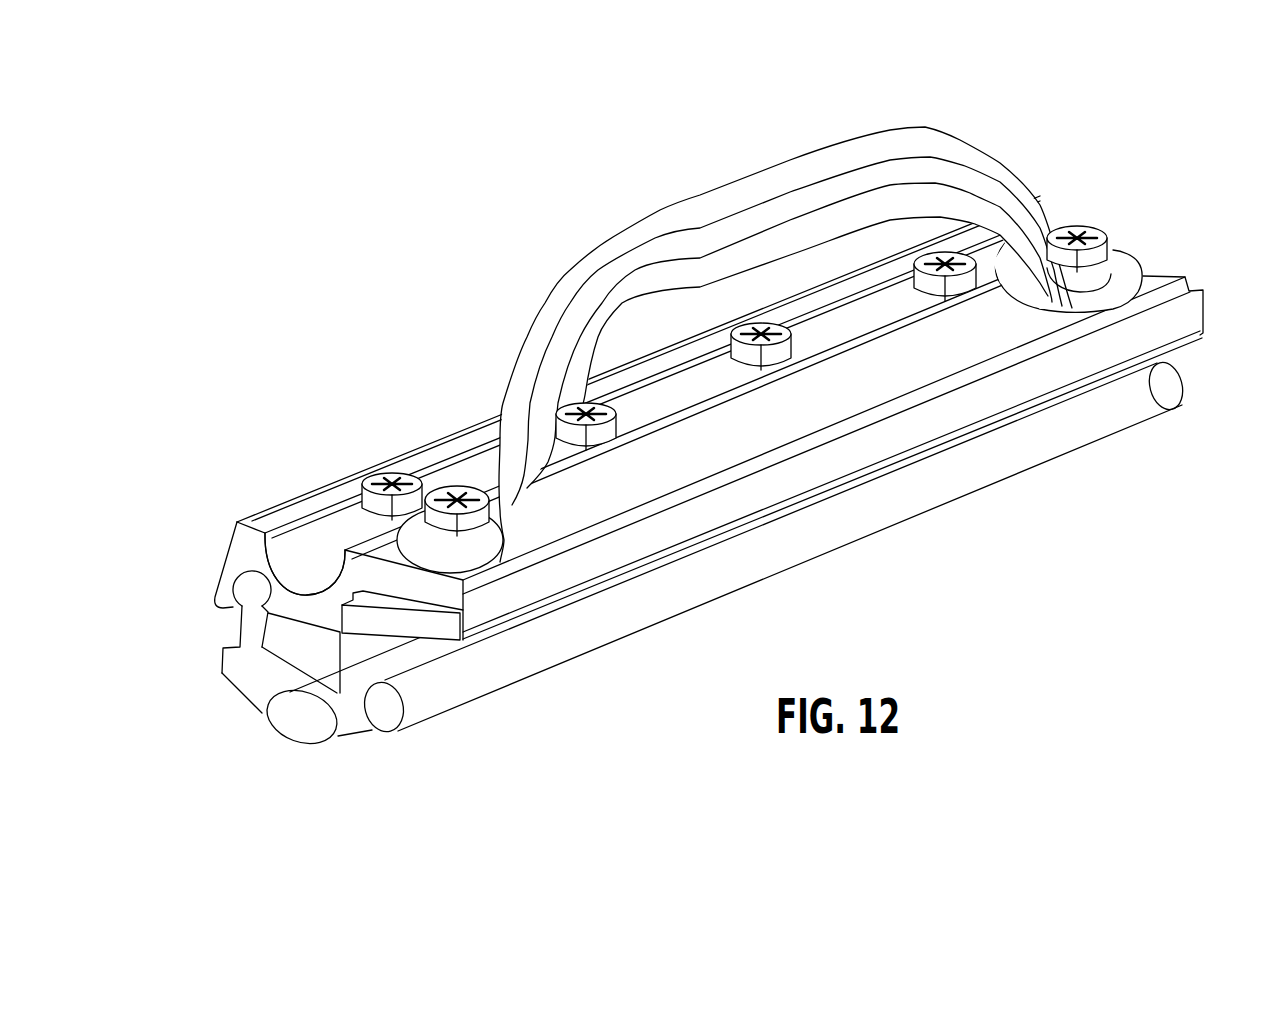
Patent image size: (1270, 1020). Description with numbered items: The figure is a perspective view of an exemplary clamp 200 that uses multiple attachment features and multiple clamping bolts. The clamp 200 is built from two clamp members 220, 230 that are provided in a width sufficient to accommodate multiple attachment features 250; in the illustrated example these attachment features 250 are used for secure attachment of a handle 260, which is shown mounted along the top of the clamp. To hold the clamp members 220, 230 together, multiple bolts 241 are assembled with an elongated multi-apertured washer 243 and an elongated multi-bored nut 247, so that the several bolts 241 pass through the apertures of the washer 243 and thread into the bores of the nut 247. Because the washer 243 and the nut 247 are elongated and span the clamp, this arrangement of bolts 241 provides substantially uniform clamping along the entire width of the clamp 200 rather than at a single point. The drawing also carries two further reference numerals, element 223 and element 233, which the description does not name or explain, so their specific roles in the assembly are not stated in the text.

The clamp 200 is at (1232, 178).
The clamp member 220 is at (235, 524).
The slide block 223 is at (441, 622).
The clamp member 230 is at (236, 693).
The tube 233 is at (385, 717).
The bolts 241 is at (925, 255).
The elongated multi-apertured washer 243 is at (304, 567).
The elongated multi-bored nut 247 is at (307, 727).
The attachment features 250 is at (1075, 232).
The handle 260 is at (710, 190).